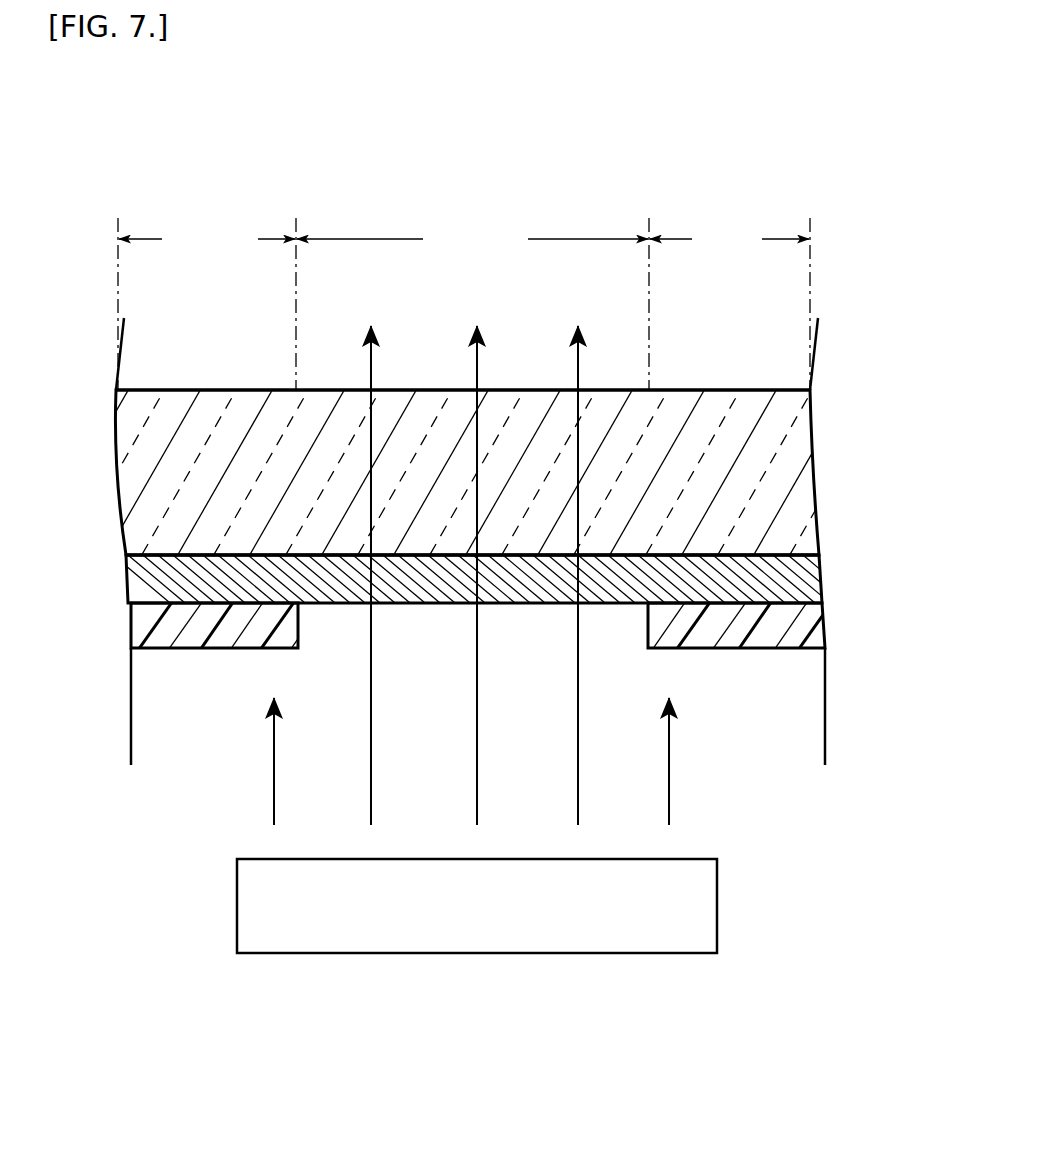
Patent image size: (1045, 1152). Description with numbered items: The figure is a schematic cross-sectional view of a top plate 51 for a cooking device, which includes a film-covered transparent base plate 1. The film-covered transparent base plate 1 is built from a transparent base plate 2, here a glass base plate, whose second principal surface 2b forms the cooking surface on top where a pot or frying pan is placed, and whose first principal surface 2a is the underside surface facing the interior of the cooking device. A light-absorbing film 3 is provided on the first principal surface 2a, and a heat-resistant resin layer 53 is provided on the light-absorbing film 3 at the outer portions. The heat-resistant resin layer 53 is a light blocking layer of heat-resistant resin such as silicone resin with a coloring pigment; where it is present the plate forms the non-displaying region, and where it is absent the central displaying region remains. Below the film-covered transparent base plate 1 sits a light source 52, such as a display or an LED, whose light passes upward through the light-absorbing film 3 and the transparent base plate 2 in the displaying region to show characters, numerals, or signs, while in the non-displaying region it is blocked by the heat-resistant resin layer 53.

The top plate for a cooking device 51 is at (158, 147).
The film-covered transparent base plate 1 is at (495, 540).
The transparent base plate 2 is at (495, 438).
The first principal surface 2a is at (737, 550).
The second principal surface 2b is at (206, 388).
The light-absorbing film 3 is at (780, 580).
The light source 52 is at (688, 912).
The heat-resistant resin layer 53 is at (185, 650).